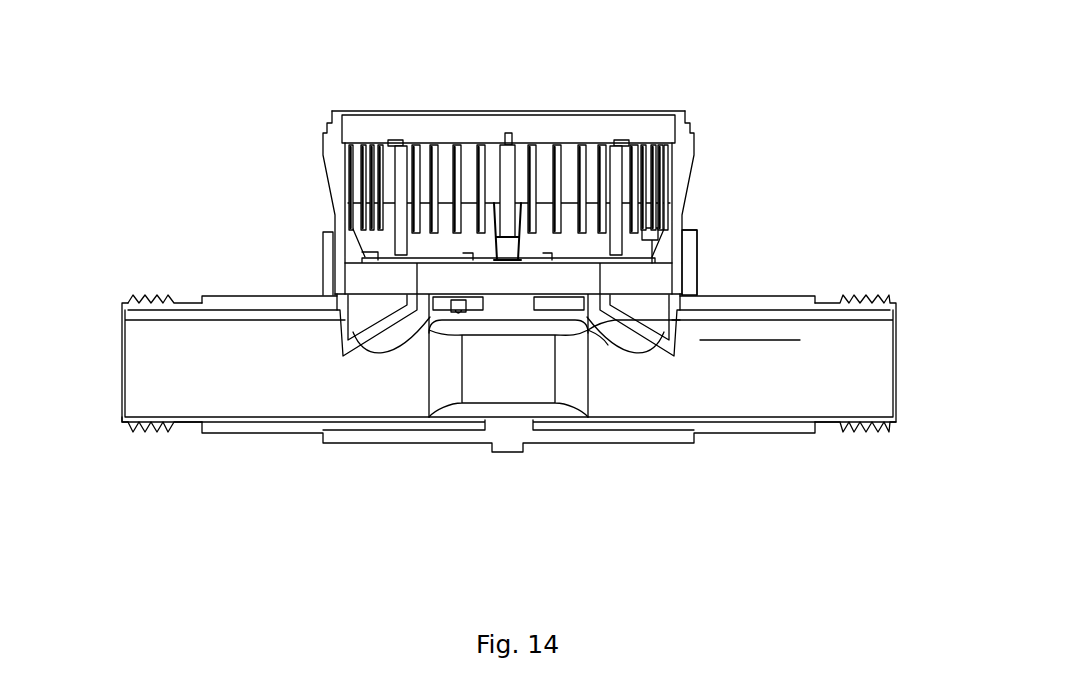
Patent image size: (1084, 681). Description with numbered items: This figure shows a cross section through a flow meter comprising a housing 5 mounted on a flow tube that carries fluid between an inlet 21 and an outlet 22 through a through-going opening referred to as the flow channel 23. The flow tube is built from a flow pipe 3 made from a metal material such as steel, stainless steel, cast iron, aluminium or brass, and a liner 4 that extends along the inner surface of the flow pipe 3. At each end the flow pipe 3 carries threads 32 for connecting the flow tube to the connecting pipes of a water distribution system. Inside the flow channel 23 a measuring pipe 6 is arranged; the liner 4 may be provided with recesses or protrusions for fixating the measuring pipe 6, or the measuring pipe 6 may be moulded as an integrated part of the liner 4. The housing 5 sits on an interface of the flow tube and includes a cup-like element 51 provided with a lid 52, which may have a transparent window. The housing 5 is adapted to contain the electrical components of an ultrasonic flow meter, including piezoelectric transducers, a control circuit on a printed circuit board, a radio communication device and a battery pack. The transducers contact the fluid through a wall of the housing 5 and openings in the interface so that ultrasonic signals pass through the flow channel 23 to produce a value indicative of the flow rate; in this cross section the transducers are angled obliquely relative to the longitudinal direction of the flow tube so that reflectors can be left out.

The inlet 21 is at (105, 351).
The outlet 22 is at (903, 363).
The threads 32 is at (153, 296).
The liner 4 is at (270, 316).
The flow pipe 3 is at (258, 427).
The flow channel 23 is at (755, 362).
The measuring pipe 6 is at (492, 367).
The housing 5 is at (718, 153).
The lid 52 is at (562, 112).
The cup-like element 51 is at (672, 248).